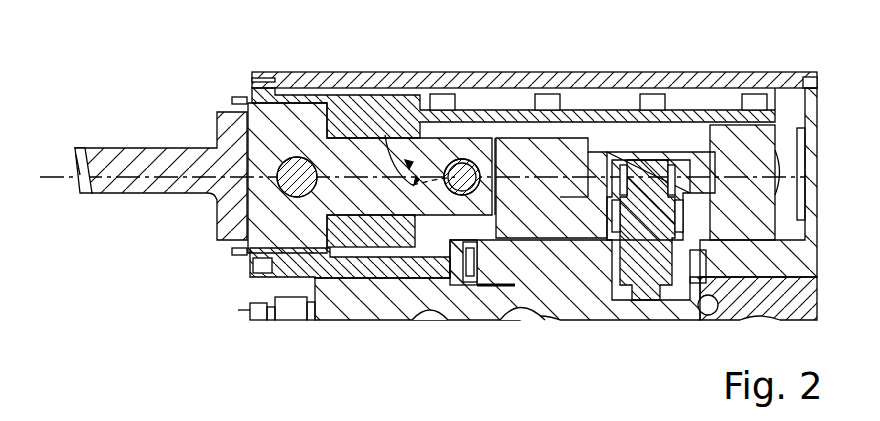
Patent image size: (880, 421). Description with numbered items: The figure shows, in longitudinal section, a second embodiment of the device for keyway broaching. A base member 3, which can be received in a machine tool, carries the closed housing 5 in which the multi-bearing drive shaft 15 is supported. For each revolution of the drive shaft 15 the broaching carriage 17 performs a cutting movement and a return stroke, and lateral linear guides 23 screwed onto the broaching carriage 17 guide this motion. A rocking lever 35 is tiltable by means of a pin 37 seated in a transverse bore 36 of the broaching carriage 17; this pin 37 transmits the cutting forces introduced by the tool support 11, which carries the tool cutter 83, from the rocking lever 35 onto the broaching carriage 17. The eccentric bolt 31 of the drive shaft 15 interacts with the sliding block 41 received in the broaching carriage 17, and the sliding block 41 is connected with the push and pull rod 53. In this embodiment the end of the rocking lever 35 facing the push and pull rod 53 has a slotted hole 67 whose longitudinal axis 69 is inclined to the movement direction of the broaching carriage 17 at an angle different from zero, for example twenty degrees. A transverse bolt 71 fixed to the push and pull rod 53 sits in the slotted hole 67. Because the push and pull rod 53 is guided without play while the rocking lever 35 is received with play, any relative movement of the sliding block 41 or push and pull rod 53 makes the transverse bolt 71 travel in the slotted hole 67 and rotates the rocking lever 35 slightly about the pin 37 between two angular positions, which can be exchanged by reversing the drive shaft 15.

The base member 3 is at (797, 304).
The housing 5 is at (810, 234).
The tool support 11 is at (128, 152).
The drive shaft 15 is at (555, 300).
The broaching carriage 17 is at (768, 142).
The lateral linear guides 23 is at (620, 98).
The eccentric bolt 31 is at (677, 165).
The rocking lever 35 is at (348, 160).
The transverse bore 36 is at (307, 197).
The pin 37 is at (284, 186).
The sliding block 41 is at (698, 157).
The push and pull rod 53 is at (575, 142).
The slotted hole 67 is at (463, 172).
The longitudinal axis 69 is at (564, 203).
The transverse bolt 71 is at (470, 160).
The tool cutter 83 is at (80, 162).